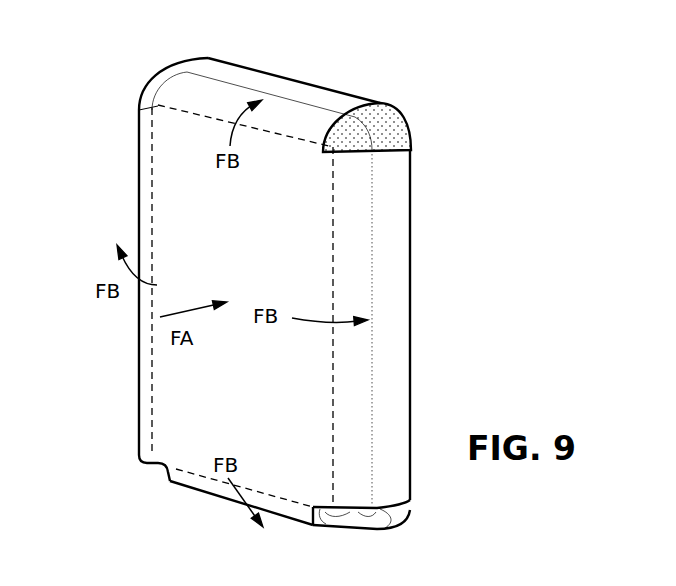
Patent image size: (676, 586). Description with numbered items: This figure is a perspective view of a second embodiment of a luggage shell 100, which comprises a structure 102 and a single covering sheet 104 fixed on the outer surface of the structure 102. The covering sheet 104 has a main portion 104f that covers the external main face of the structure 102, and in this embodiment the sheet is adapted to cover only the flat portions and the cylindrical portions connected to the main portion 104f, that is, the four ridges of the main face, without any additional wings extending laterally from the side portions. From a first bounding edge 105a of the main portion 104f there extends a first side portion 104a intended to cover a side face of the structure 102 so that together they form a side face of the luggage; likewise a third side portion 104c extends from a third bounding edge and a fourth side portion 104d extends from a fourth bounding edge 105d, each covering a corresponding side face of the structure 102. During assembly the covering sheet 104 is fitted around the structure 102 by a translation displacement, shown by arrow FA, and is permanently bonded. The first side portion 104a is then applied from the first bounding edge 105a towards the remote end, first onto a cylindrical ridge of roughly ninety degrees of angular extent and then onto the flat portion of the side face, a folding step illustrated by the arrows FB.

The luggage shell 100 is at (462, 93).
The structure 102 is at (378, 125).
The covering sheet 104 is at (388, 270).
The first side portion 104a is at (388, 348).
The third side portion 104c is at (208, 497).
The fourth side portion 104d is at (278, 89).
The main portion 104f is at (177, 222).
The first bounding edge 105a is at (335, 235).
The fourth bounding edge 105d is at (200, 113).